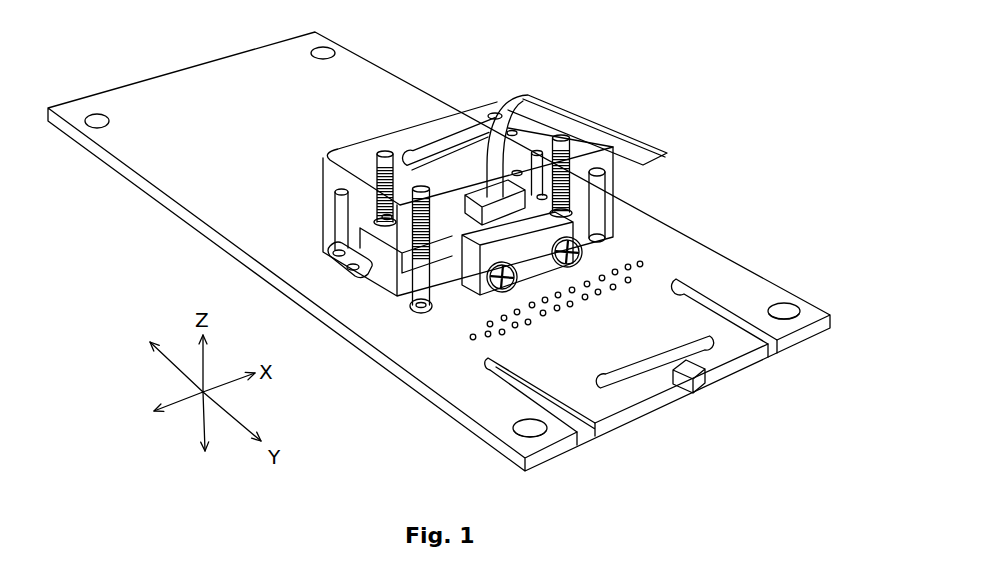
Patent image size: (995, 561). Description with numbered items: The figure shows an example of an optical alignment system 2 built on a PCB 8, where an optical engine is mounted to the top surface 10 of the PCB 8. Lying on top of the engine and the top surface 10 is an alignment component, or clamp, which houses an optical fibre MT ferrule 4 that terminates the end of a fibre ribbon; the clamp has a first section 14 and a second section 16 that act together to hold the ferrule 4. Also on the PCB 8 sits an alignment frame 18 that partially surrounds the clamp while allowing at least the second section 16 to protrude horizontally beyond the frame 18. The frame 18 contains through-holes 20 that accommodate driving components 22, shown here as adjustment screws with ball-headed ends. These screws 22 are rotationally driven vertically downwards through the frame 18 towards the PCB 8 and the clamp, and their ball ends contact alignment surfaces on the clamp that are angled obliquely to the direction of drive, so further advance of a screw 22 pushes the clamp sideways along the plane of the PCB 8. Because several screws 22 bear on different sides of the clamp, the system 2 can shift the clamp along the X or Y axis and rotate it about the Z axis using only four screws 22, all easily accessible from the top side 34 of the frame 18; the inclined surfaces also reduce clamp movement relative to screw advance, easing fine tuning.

The optical alignment system 2 is at (694, 90).
The optical fibre MT ferrule 4 is at (503, 224).
The PCB 8 is at (742, 285).
The top surface 10 is at (683, 257).
The first section 14 is at (390, 254).
The second section 16 is at (545, 250).
The alignment frame 18 is at (500, 97).
The through-holes 20 is at (385, 151).
The driving components 22 is at (372, 178).
The top side 34 is at (443, 128).